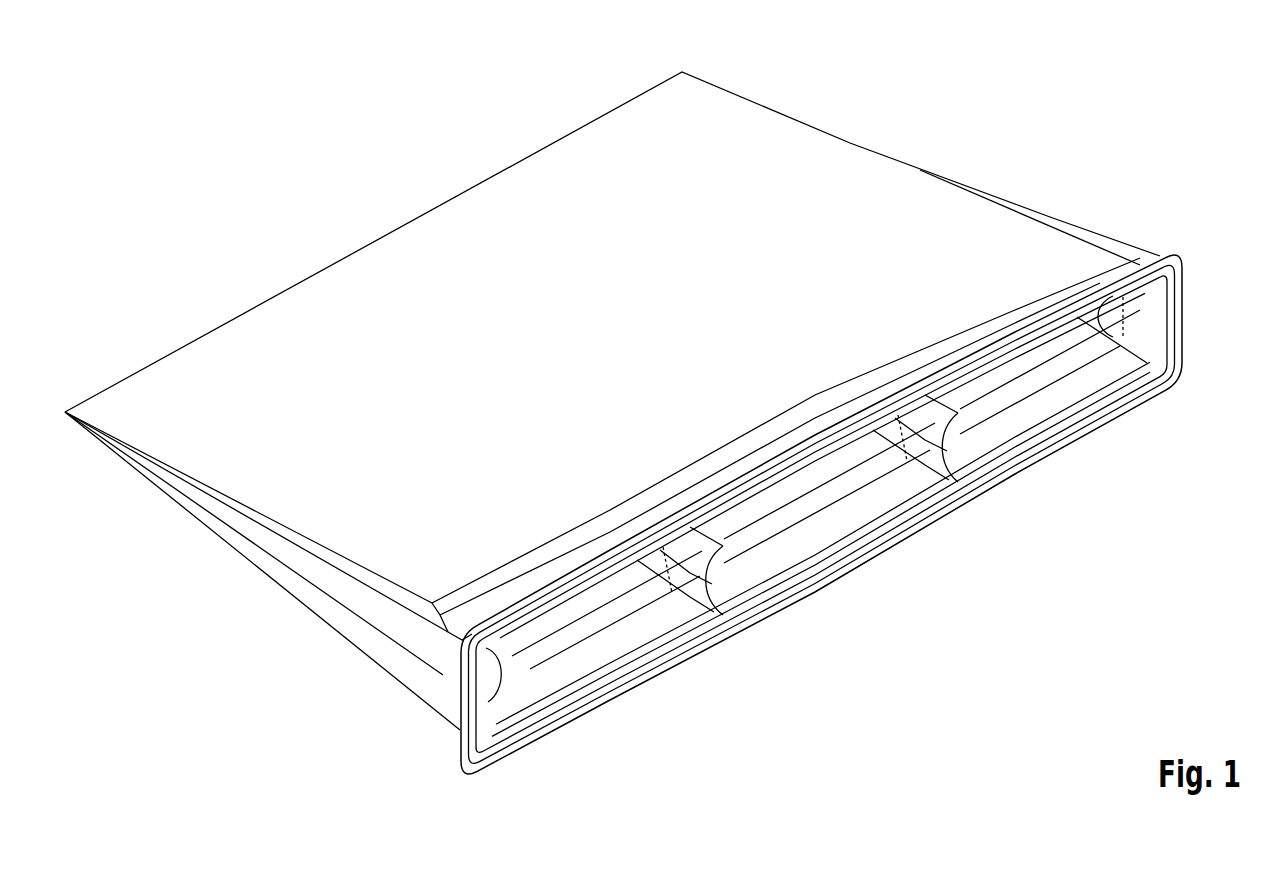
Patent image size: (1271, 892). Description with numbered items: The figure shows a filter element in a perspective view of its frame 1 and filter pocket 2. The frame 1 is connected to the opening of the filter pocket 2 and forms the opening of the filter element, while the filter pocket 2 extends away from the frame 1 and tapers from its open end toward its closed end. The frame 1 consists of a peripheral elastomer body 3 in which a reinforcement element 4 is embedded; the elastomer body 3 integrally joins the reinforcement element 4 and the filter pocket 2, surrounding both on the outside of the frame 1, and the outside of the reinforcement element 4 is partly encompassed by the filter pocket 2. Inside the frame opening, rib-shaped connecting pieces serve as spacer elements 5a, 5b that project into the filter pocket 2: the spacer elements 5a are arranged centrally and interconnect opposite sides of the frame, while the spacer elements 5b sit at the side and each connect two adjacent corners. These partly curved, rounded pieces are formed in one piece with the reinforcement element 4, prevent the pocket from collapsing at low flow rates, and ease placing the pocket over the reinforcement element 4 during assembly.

The frame 1 is at (1181, 382).
The filter pocket 2 is at (935, 210).
The elastomer body 3 is at (846, 566).
The reinforcement element 4 is at (878, 505).
The spacer elements 5a is at (698, 580).
The spacer elements 5b is at (503, 672).